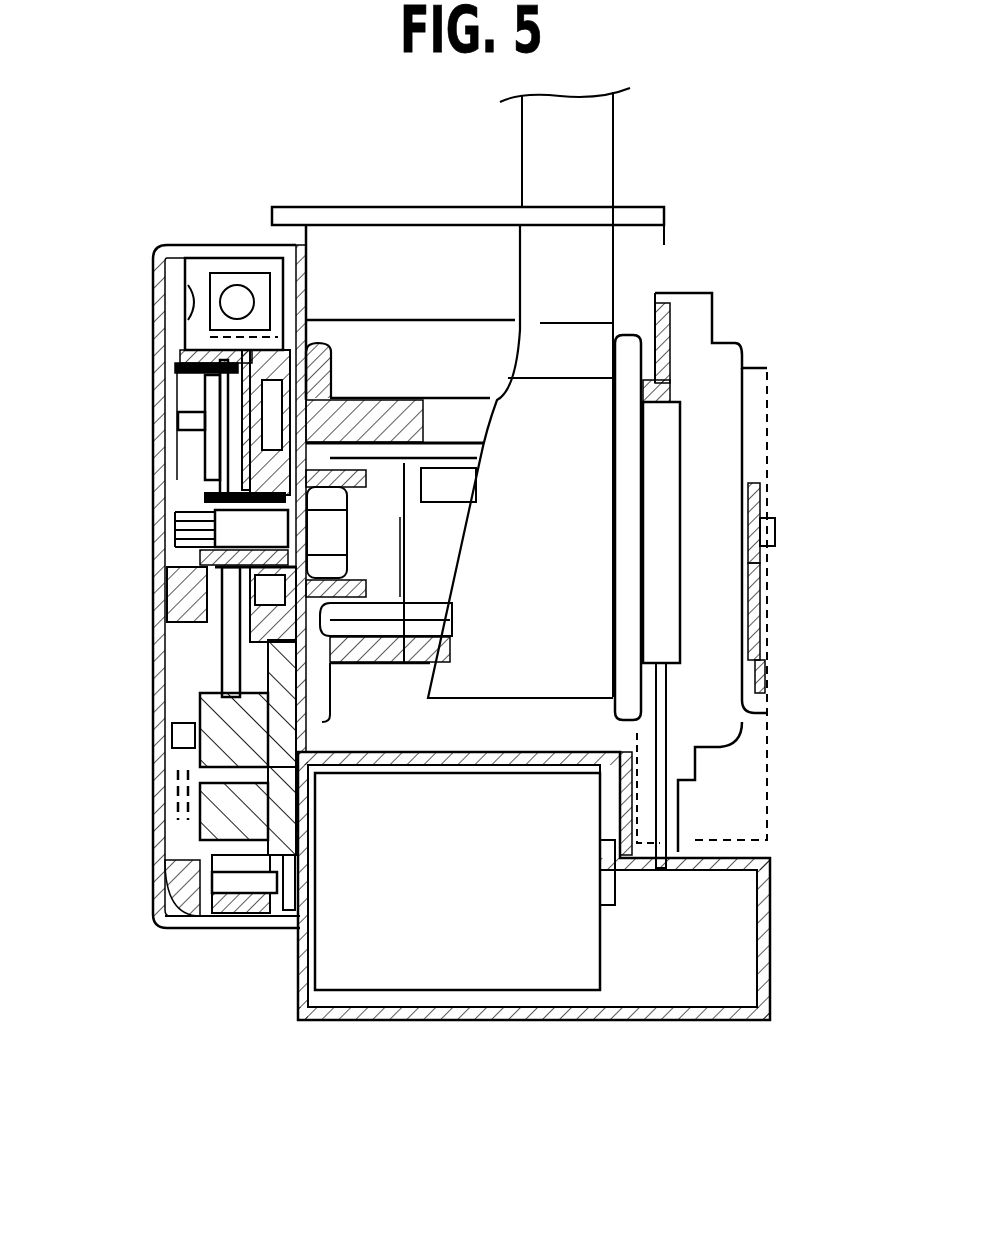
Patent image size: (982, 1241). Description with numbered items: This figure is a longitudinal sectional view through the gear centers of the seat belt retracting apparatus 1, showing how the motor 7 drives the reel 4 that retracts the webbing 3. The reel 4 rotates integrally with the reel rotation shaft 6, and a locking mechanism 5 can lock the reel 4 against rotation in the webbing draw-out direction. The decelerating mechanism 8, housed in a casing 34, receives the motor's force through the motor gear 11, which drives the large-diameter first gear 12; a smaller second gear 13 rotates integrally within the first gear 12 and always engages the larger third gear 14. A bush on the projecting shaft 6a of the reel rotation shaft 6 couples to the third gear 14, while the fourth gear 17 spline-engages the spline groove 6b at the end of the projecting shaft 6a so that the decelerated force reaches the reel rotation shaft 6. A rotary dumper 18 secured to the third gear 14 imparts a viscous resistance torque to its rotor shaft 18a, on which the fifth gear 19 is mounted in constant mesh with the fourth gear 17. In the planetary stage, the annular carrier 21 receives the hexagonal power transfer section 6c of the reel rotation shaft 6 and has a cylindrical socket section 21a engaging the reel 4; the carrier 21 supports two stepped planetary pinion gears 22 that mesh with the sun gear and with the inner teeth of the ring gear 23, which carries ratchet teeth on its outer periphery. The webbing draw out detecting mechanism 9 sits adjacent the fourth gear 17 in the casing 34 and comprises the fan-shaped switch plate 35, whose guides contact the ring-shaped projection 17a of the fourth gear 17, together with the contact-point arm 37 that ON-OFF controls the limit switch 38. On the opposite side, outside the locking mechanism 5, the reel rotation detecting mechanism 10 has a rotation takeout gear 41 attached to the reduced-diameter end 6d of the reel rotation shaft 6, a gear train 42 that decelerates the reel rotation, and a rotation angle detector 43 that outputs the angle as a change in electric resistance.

The seat belt retracting apparatus 1 is at (720, 148).
The webbing 3 is at (613, 152).
The reel 4 is at (472, 397).
The locking mechanism 5 is at (745, 345).
The reel rotation shaft 6 is at (387, 518).
The projecting shaft 6a is at (240, 590).
The spline groove 6b is at (240, 530).
The power transfer section 6c is at (262, 620).
The reduced-diameter end 6d is at (775, 540).
The motor 7 is at (420, 995).
The decelerating mechanism 8 is at (138, 318).
The webbing draw out detecting mechanism 9 is at (142, 796).
The reel rotation detecting mechanism 10 is at (778, 512).
The motor gear 11 is at (240, 916).
The first gear 12 is at (240, 900).
The second gear 13 is at (230, 880).
The third gear 14 is at (210, 660).
The fourth gear 17 is at (230, 455).
The ring-shaped projection 17a is at (210, 480).
The rotary dumper 18 is at (222, 430).
The rotor shaft 18a is at (180, 420).
The fifth gear 19 is at (240, 410).
The carrier 21 is at (332, 347).
The cylindrical socket section 21a is at (352, 455).
The planetary pinion gears 22 is at (208, 400).
The ring gear 23 is at (263, 385).
The casing 34 is at (198, 247).
The switch plate 35 is at (200, 710).
The contact-point arm 37 is at (200, 800).
The limit switch 38 is at (212, 862).
The rotation takeout gear 41 is at (765, 500).
The gear train 42 is at (765, 660).
The rotation angle detector 43 is at (745, 600).